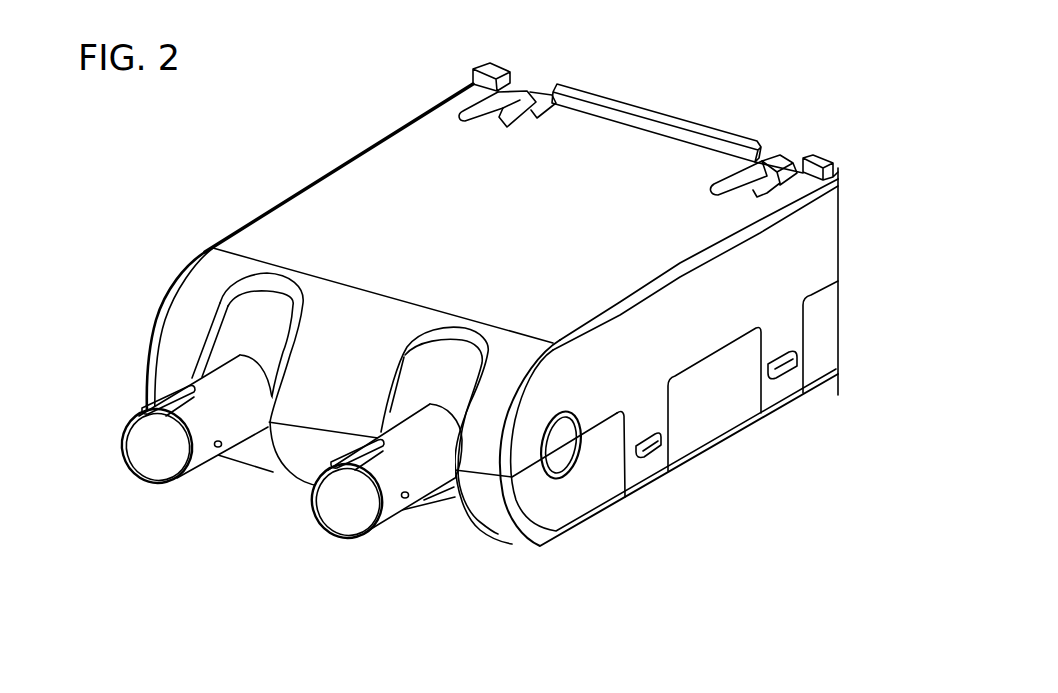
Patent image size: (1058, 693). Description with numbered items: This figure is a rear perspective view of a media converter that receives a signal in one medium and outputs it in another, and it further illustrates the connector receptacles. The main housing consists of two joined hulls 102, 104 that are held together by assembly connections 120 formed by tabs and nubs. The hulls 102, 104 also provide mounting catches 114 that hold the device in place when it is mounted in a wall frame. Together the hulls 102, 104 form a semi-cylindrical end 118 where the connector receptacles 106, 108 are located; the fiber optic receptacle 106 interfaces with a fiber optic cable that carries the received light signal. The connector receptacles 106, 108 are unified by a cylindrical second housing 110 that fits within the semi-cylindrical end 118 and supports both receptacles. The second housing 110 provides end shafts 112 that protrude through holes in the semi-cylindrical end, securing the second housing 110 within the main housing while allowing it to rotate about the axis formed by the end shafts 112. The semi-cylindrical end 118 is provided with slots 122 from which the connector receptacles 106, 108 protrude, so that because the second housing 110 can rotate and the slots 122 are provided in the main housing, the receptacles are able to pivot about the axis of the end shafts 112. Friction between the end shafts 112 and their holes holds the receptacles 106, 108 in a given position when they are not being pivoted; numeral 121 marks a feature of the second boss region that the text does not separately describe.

The hull 102 is at (292, 212).
The hull 104 is at (825, 337).
The fiber optic receptacle 106 is at (140, 450).
The connector receptacle 108 is at (323, 502).
The second housing 110 is at (233, 325).
The end shaft 112 is at (567, 452).
The mounting catch 114 is at (500, 112).
The semi-cylindrical end 118 is at (370, 307).
The assembly connection 120 is at (783, 378).
The second boss 121 is at (463, 335).
The slot 122 is at (268, 280).